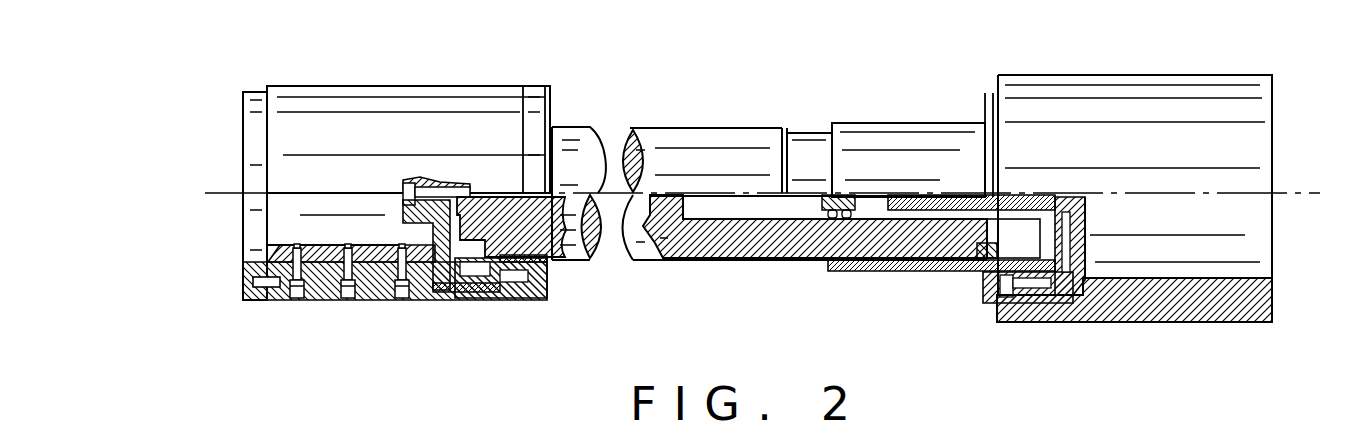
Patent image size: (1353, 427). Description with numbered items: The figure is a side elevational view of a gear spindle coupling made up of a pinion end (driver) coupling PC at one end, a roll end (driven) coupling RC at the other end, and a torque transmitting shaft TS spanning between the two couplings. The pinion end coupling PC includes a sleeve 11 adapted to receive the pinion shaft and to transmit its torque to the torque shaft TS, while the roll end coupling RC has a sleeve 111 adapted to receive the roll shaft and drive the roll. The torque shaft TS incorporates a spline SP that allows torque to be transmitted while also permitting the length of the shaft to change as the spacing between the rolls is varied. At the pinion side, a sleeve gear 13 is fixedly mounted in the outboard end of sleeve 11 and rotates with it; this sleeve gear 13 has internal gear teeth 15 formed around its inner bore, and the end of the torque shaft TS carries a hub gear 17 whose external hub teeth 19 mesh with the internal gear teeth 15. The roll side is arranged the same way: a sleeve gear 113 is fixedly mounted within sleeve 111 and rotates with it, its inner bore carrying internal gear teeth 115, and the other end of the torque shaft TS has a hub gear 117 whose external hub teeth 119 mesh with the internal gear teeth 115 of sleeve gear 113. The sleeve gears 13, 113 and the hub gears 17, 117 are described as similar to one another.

The roll end coupling RC is at (478, 86).
The pinion end coupling PC is at (1023, 75).
The torque transmitting shaft TS is at (803, 137).
The spline SP is at (648, 247).
The sleeve 111 is at (530, 110).
The sleeve 11 is at (1023, 117).
The sleeve gear 13 is at (997, 315).
The internal gear teeth 15 is at (983, 290).
The hub gear 17 is at (948, 272).
The external hub teeth 19 is at (1055, 293).
The sleeve gear 113 is at (500, 297).
The internal gear teeth 115 is at (522, 295).
The hub gear 117 is at (548, 300).
The external hub teeth 119 is at (472, 300).